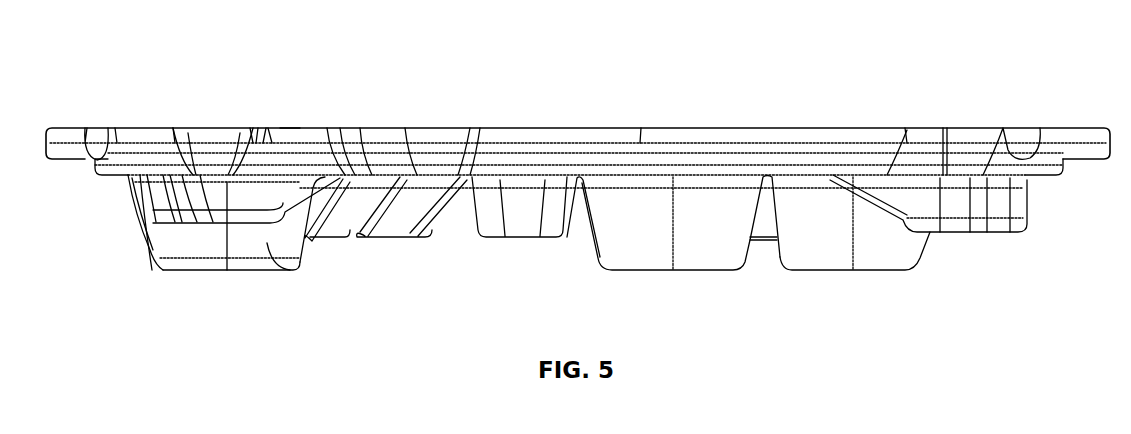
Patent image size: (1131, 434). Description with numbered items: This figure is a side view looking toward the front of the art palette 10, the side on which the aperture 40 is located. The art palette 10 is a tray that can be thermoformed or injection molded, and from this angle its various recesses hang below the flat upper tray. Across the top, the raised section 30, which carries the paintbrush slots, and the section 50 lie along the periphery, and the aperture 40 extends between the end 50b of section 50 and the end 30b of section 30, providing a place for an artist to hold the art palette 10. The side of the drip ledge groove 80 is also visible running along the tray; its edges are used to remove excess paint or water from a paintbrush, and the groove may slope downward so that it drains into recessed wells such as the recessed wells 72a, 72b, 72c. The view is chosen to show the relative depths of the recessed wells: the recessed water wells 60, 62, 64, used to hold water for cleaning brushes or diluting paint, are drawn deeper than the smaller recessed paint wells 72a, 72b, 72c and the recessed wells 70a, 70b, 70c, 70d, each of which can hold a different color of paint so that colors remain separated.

The art palette 10 is at (900, 91).
The raised section 30 is at (400, 128).
The end of section 30 30b is at (335, 128).
The aperture 40 is at (287, 121).
The section 50 is at (155, 128).
The end of section 50 50b is at (251, 128).
The recessed water well 60 is at (300, 272).
The recessed water well 62 is at (858, 256).
The recessed water well 64 is at (704, 256).
The recessed well 70a is at (142, 232).
The recessed well 70b is at (158, 262).
The recessed well 70c is at (190, 226).
The recessed well 70d is at (215, 212).
The recessed well 72a is at (520, 218).
The recessed well 72b is at (410, 218).
The recessed well 72c is at (325, 217).
The drip ledge groove 80 is at (636, 135).